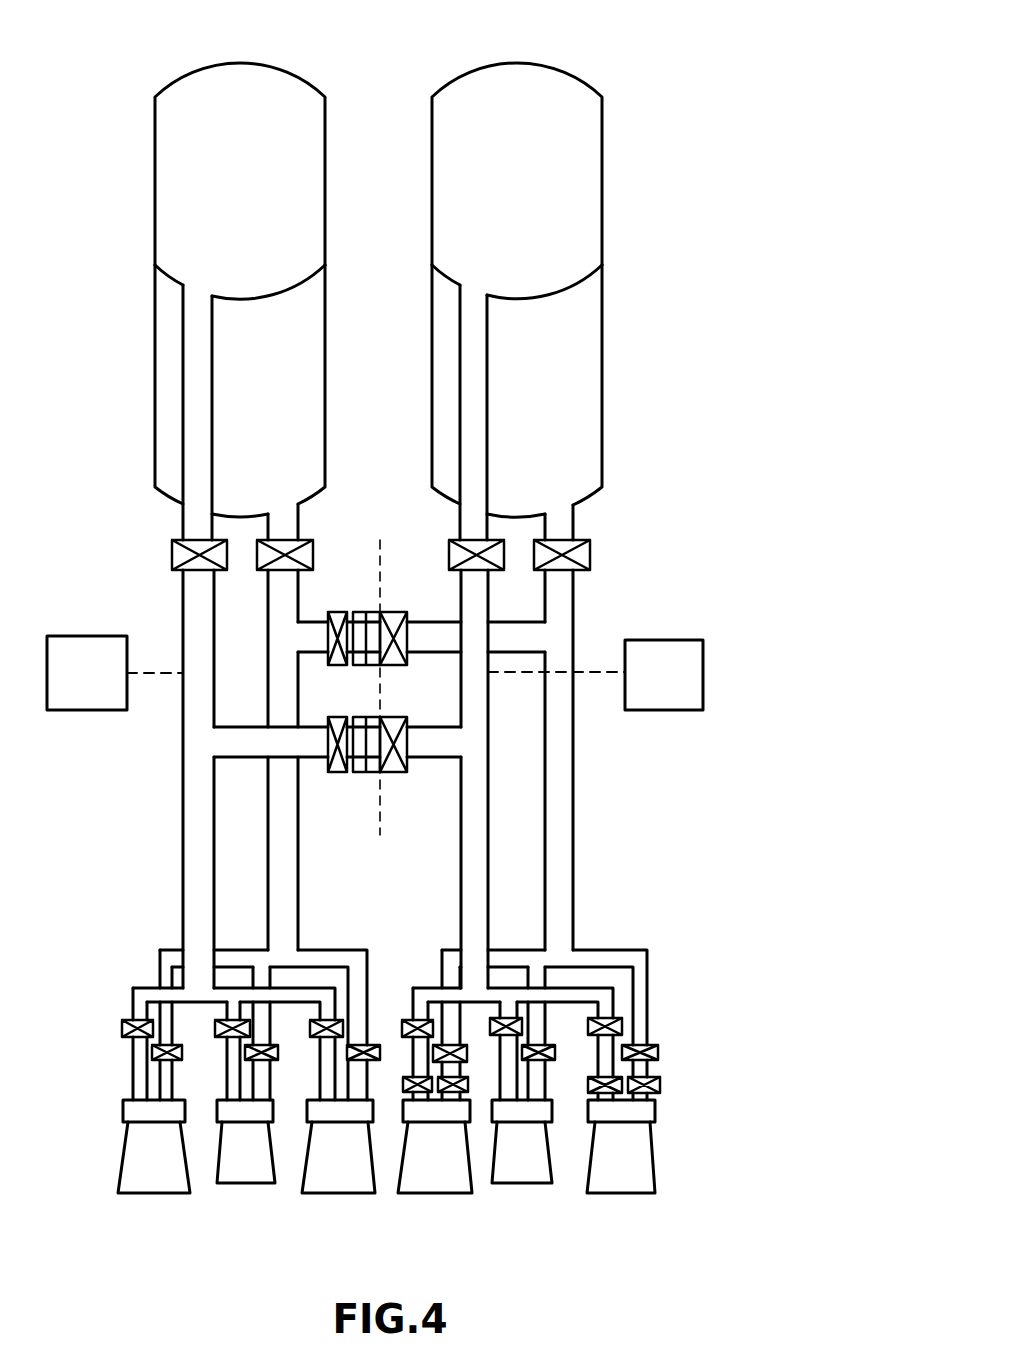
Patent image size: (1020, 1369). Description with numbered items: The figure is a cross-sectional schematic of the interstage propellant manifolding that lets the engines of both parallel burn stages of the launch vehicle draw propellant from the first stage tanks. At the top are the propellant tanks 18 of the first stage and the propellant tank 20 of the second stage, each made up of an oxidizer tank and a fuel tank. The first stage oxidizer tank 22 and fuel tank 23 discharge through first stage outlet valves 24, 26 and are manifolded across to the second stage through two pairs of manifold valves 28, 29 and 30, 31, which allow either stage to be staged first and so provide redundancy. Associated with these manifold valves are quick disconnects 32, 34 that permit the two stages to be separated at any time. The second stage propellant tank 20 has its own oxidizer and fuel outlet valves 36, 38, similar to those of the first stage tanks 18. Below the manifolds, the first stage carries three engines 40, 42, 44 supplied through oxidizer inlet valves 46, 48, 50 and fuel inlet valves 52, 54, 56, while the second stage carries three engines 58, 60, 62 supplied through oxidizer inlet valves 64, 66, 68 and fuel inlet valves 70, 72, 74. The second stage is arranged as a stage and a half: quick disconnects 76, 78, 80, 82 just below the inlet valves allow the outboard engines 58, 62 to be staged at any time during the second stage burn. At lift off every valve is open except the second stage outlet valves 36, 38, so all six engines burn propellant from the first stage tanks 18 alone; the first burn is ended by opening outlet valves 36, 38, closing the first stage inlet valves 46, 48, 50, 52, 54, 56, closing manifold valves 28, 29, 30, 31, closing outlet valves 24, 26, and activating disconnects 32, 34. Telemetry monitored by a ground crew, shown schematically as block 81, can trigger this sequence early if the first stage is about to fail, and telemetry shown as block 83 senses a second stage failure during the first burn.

The first stage propellant tanks 18 is at (250, 55).
The second stage propellant tank 20 is at (525, 50).
The oxidizer tank 22 is at (155, 210).
The fuel tank 23 is at (155, 385).
The first stage outlet valve 24 is at (172, 548).
The first stage outlet valve 26 is at (310, 540).
The manifold valve 28 is at (327, 619).
The manifold valve 29 is at (392, 612).
The manifold valve 30 is at (326, 718).
The manifold valve 31 is at (400, 717).
The quick disconnect 32 is at (364, 612).
The quick disconnect 34 is at (358, 717).
The second stage oxidizer outlet valve 36 is at (448, 548).
The second stage fuel outlet valve 38 is at (590, 548).
The first stage engine 40 is at (172, 1193).
The first stage engine 42 is at (252, 1183).
The first stage engine 44 is at (348, 1193).
The oxidizer inlet valve 46 is at (118, 1028).
The oxidizer inlet valve 48 is at (215, 1028).
The oxidizer inlet valve 50 is at (312, 1032).
The fuel inlet valve 52 is at (152, 1053).
The fuel inlet valve 54 is at (278, 1048).
The fuel inlet valve 56 is at (381, 1060).
The second stage engine 58 is at (433, 1193).
The second stage engine 60 is at (535, 1184).
The second stage engine 62 is at (628, 1193).
The oxidizer inlet valve 64 is at (405, 1020).
The oxidizer inlet valve 66 is at (515, 1018).
The oxidizer inlet valve 68 is at (625, 1030).
The fuel inlet valve 70 is at (470, 1060).
The fuel inlet valve 72 is at (554, 1058).
The fuel inlet valve 74 is at (659, 1053).
The quick disconnect 76 is at (403, 1083).
The quick disconnect 78 is at (467, 1092).
The quick disconnect 80 is at (590, 1086).
The quick disconnect 82 is at (660, 1092).
The telemetry block 81 is at (108, 636).
The telemetry block 83 is at (646, 640).